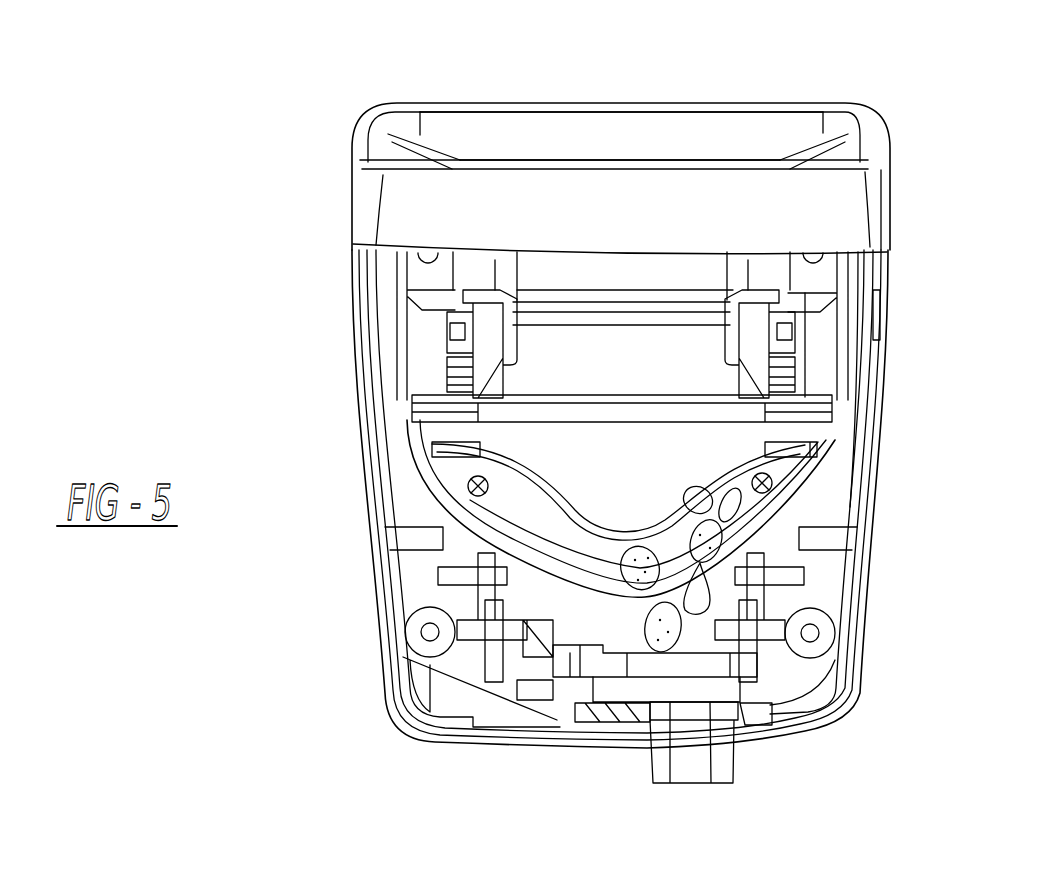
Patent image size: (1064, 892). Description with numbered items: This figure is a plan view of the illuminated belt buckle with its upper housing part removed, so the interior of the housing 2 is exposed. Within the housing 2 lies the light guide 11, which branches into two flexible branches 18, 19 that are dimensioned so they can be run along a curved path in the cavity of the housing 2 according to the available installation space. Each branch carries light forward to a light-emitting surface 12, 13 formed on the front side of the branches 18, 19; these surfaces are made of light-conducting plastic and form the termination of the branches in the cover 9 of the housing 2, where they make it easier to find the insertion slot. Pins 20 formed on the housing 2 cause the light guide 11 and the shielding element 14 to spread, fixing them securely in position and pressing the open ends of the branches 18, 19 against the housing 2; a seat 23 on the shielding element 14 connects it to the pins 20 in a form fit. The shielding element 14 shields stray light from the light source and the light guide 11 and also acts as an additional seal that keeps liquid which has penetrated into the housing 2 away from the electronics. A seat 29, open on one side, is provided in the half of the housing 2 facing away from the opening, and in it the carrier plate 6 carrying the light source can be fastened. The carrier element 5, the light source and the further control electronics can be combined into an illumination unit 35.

The housing 2 is at (873, 568).
The carrier element 5 is at (686, 103).
The carrier plate 6 is at (763, 663).
The cover 9 is at (878, 208).
The light guide 11 is at (877, 267).
The light-emitting surface 12 is at (860, 120).
The light-emitting surface 13 is at (377, 117).
The shielding element 14 is at (790, 433).
The branch 18 is at (882, 317).
The branch 19 is at (358, 317).
The pins 20 is at (480, 486).
The seat 23 is at (520, 496).
The seat 29 is at (740, 743).
The illumination unit 35 is at (663, 663).